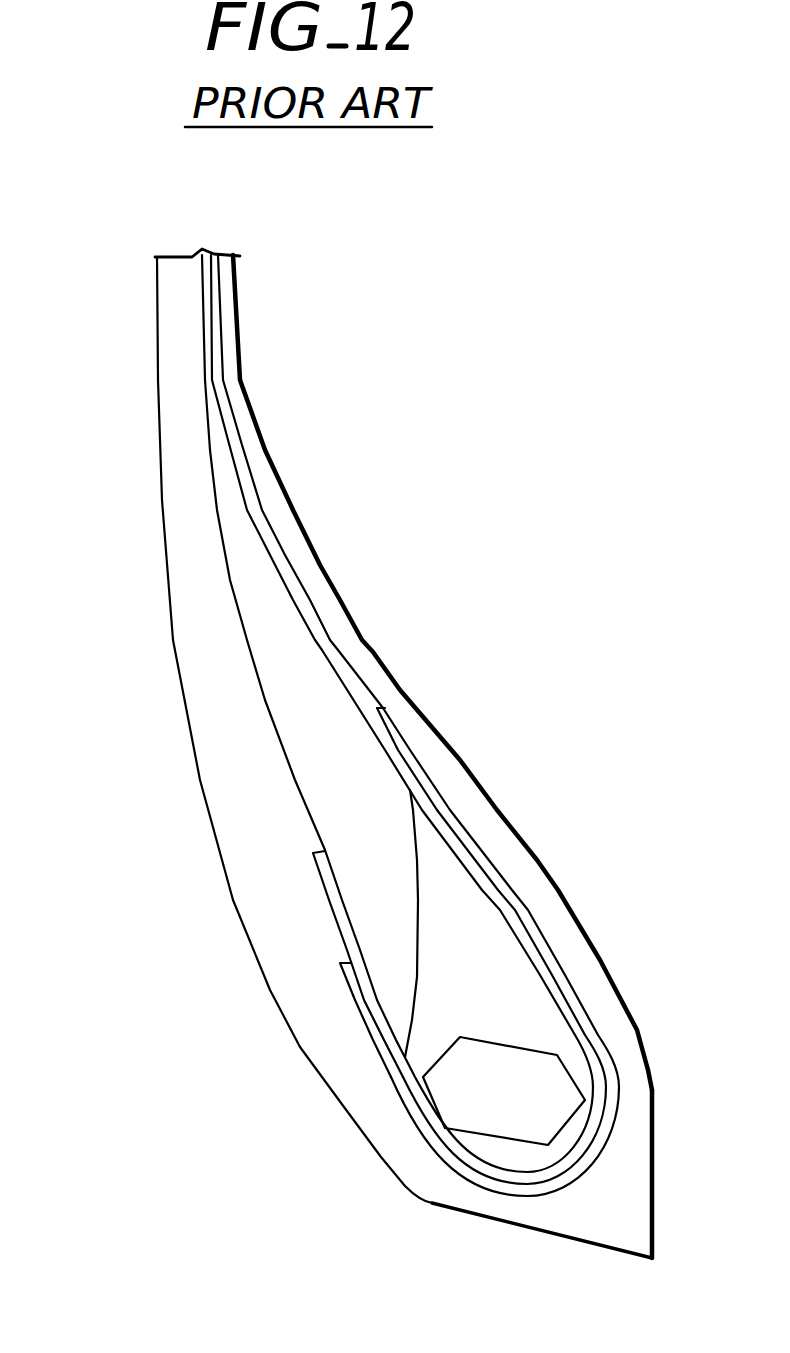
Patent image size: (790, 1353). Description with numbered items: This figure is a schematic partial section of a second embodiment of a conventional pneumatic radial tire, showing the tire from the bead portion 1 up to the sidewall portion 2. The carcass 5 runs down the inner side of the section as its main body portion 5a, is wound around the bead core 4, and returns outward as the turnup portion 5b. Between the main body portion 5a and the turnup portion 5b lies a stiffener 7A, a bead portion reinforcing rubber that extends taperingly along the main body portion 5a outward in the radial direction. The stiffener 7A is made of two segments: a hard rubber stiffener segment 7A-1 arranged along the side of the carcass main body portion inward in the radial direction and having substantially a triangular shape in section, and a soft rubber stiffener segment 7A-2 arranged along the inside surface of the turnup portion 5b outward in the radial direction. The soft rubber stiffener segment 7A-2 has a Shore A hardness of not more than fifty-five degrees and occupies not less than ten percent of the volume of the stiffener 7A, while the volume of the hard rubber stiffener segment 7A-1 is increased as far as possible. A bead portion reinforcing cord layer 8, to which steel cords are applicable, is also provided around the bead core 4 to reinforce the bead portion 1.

The bead portion 1 is at (287, 1051).
The sidewall portion 2 is at (150, 343).
The bead core 4 is at (490, 1118).
The carcass 5 is at (250, 469).
The main body portion of the carcass 5a is at (297, 580).
The turnup portion of the carcass 5b is at (335, 912).
The stiffener 7A is at (465, 923).
The hard rubber stiffener segment 7A-1 is at (512, 985).
The soft rubber stiffener segment 7A-2 is at (350, 775).
The bead portion reinforcing cord layer 8 is at (593, 1010).